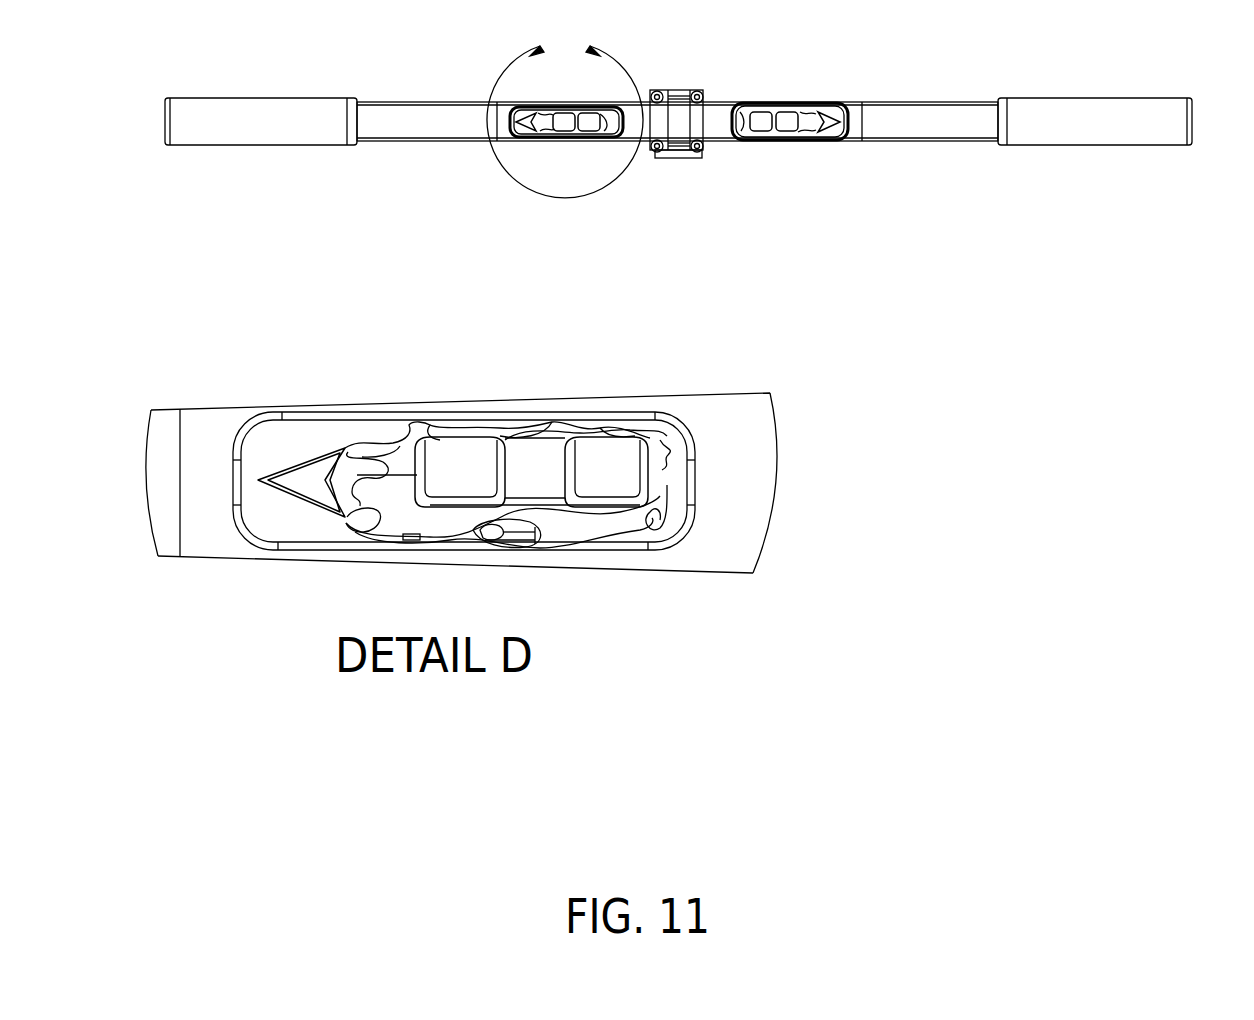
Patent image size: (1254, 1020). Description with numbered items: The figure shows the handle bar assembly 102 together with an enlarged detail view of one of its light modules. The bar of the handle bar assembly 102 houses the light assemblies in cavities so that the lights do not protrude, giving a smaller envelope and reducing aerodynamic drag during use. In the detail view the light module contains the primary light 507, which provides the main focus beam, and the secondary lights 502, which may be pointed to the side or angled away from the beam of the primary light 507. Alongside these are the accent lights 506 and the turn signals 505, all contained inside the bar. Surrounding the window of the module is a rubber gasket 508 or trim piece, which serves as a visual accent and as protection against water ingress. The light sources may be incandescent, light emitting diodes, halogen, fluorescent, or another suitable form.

The handle bar assembly 102 is at (678, 103).
The secondary light 502 is at (462, 458).
The turn signal 505 is at (303, 472).
The accent light 506 is at (385, 513).
The primary light 507 is at (613, 458).
The rubber gasket 508 is at (660, 413).